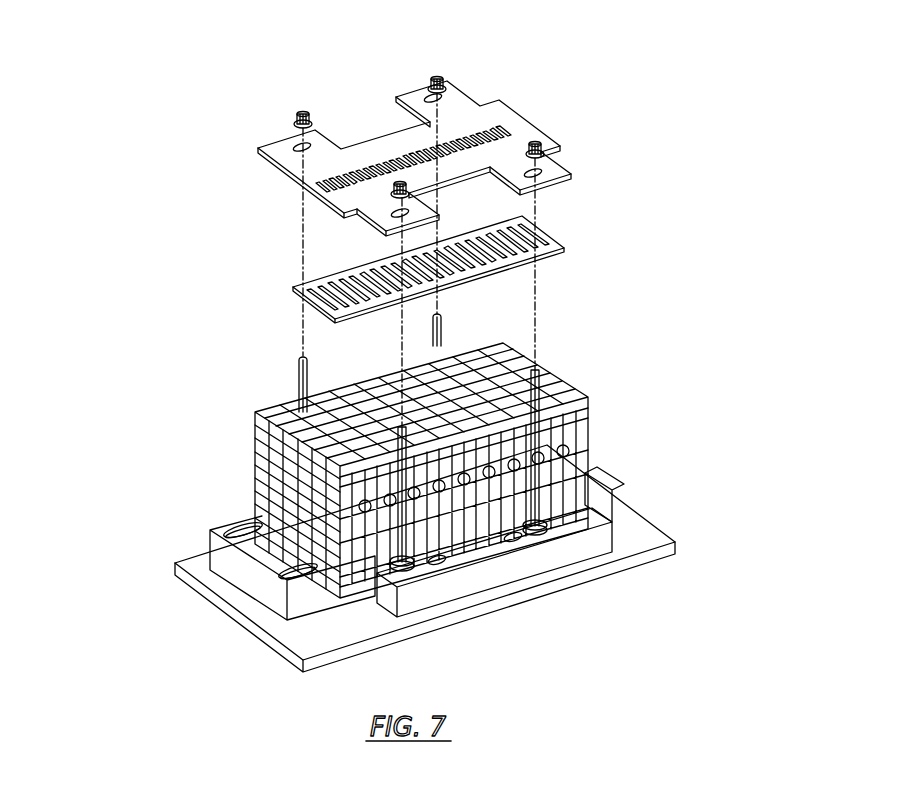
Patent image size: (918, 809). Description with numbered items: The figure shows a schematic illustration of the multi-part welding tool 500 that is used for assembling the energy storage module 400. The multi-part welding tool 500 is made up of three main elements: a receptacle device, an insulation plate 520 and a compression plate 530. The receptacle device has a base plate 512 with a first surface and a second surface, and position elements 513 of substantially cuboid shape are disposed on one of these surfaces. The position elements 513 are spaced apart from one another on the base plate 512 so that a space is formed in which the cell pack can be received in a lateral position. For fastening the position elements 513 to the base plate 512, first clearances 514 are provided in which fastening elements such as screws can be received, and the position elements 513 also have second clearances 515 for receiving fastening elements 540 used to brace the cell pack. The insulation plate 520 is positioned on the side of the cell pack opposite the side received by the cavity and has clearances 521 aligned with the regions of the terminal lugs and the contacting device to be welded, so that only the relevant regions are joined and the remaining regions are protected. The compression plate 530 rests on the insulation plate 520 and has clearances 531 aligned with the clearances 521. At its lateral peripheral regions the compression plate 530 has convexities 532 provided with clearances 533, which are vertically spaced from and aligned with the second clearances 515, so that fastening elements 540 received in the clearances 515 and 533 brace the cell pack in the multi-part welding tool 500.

The multi-part welding tool 500 is at (207, 328).
The energy storage module 400 is at (521, 456).
The base plate 512 is at (416, 575).
The position elements 513 is at (411, 606).
The first clearances 514 is at (288, 582).
The second clearances 515 is at (583, 520).
The insulation plate 520 is at (484, 257).
The clearances 521 is at (533, 224).
The compression plate 530 is at (426, 139).
The clearances 531 is at (572, 141).
The convexities 532 is at (322, 152).
The clearances 533 is at (268, 150).
The fastening elements 540 is at (575, 388).